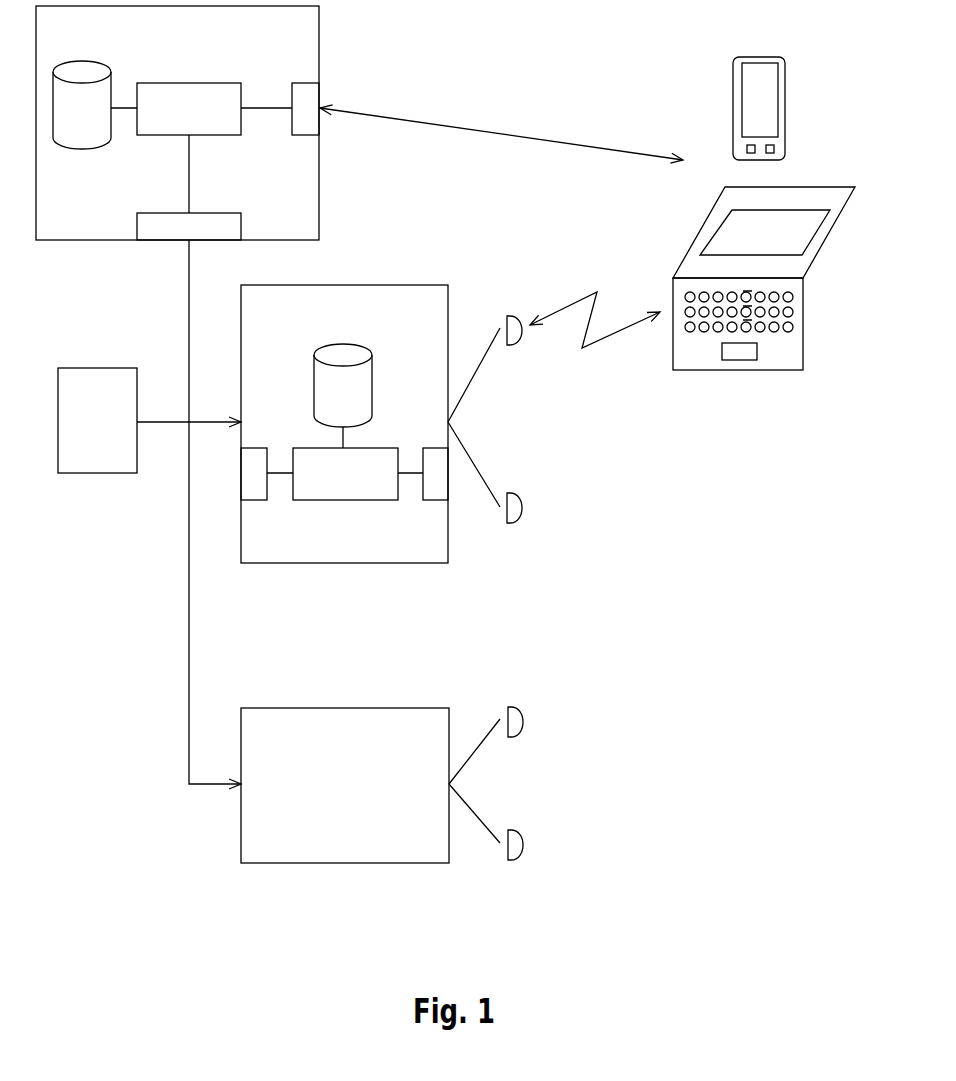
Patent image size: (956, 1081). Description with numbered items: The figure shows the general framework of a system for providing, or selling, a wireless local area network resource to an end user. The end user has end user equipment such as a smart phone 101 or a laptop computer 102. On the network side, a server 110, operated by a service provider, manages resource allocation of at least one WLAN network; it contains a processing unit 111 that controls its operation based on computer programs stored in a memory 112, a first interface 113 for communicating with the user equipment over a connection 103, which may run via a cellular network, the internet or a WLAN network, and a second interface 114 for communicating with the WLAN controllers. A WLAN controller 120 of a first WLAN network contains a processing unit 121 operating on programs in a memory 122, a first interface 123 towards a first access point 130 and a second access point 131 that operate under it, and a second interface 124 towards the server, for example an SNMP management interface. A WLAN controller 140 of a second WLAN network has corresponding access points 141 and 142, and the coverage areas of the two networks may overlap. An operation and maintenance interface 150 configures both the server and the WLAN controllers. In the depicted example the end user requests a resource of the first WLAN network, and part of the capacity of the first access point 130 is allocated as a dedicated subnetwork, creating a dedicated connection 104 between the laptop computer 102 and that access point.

The smart phone 101 is at (787, 123).
The laptop computer 102 is at (803, 327).
The connection 103 is at (525, 135).
The dedicated connection 104 is at (574, 292).
The server 110 is at (320, 34).
The processing unit 111 is at (214, 83).
The memory 112 is at (83, 145).
The first interface 113 is at (307, 135).
The second interface 114 is at (137, 230).
The WLAN controller 120 is at (393, 285).
The processing unit 121 is at (350, 500).
The memory 122 is at (358, 345).
The first interface 123 is at (438, 500).
The second interface 124 is at (265, 500).
The first access point 130 is at (511, 315).
The second access point 131 is at (512, 523).
The WLAN controller 140 is at (344, 708).
The access point 141 is at (511, 707).
The access point 142 is at (512, 860).
The operation and maintenance interface 150 is at (104, 367).